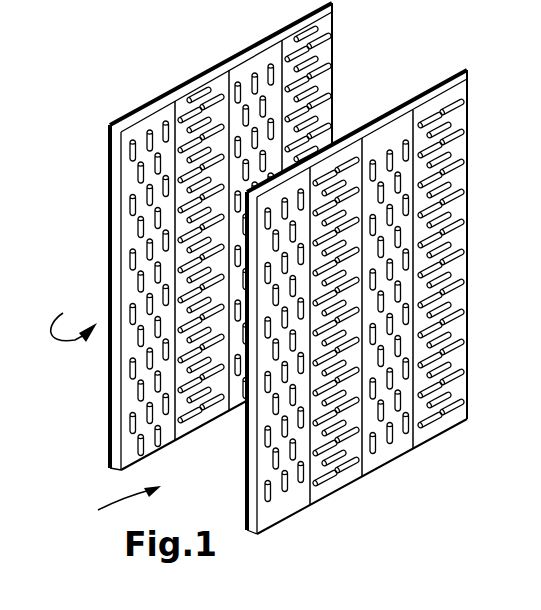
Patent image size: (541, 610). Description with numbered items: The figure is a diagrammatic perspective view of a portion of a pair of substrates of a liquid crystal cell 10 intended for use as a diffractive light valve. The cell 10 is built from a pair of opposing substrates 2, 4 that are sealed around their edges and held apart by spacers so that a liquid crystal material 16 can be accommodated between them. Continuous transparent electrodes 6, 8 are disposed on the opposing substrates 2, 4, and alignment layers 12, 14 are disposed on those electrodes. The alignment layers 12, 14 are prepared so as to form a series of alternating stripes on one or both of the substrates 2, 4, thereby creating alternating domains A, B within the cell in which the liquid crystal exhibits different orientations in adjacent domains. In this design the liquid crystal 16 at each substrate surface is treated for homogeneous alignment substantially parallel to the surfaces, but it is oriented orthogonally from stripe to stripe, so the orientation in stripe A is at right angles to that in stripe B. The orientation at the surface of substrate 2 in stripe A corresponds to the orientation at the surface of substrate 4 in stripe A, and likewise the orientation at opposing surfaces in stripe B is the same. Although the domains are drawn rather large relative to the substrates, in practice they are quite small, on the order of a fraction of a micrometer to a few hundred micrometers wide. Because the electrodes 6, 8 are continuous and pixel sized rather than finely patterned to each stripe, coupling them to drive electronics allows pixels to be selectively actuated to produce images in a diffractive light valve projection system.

The substrate 2 is at (195, 236).
The substrate 4 is at (380, 273).
The transparent electrode 6 is at (448, 70).
The transparent electrode 8 is at (113, 182).
The cell 10 is at (74, 317).
The alignment layer 12 is at (134, 116).
The alignment layer 14 is at (357, 105).
The liquid crystal material 16 is at (117, 498).
The domain A is at (153, 118).
The domain B is at (219, 83).